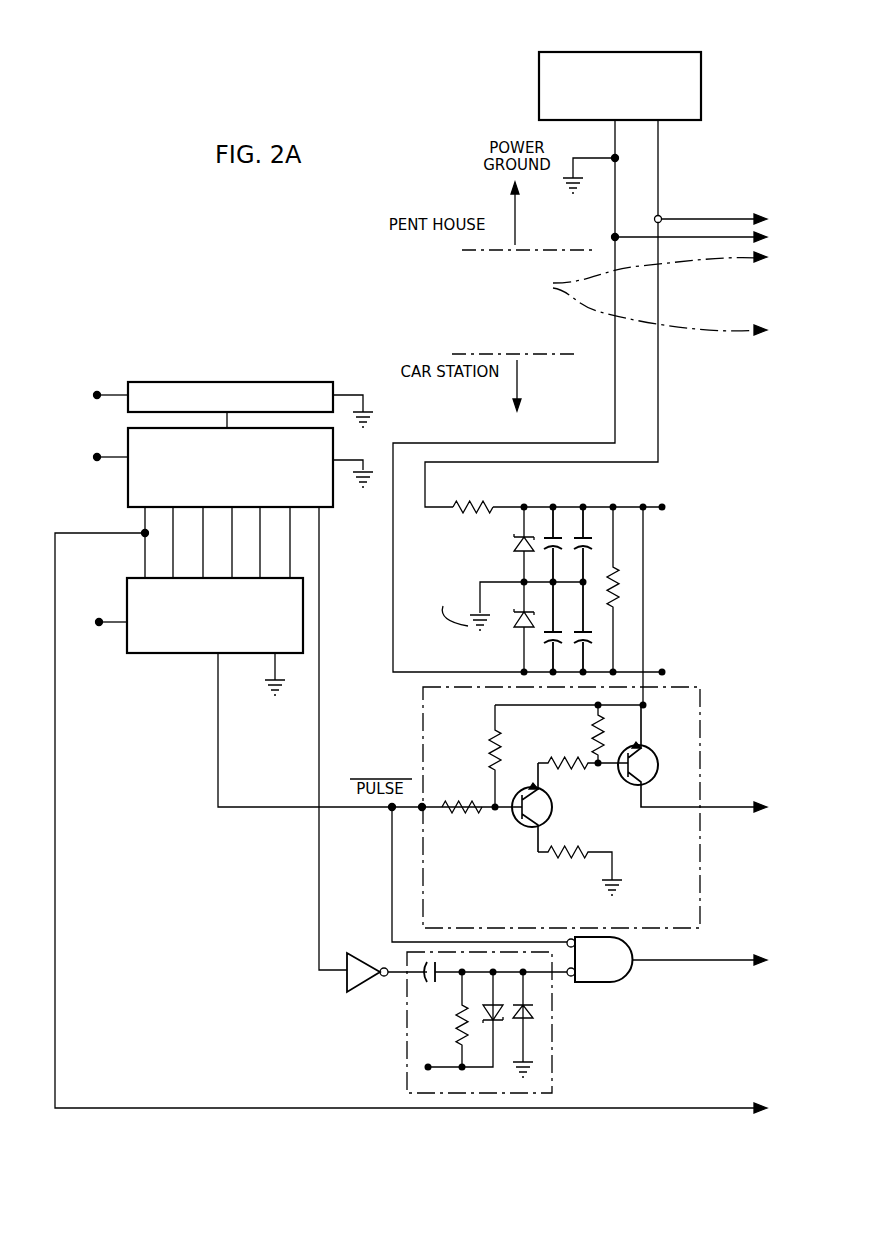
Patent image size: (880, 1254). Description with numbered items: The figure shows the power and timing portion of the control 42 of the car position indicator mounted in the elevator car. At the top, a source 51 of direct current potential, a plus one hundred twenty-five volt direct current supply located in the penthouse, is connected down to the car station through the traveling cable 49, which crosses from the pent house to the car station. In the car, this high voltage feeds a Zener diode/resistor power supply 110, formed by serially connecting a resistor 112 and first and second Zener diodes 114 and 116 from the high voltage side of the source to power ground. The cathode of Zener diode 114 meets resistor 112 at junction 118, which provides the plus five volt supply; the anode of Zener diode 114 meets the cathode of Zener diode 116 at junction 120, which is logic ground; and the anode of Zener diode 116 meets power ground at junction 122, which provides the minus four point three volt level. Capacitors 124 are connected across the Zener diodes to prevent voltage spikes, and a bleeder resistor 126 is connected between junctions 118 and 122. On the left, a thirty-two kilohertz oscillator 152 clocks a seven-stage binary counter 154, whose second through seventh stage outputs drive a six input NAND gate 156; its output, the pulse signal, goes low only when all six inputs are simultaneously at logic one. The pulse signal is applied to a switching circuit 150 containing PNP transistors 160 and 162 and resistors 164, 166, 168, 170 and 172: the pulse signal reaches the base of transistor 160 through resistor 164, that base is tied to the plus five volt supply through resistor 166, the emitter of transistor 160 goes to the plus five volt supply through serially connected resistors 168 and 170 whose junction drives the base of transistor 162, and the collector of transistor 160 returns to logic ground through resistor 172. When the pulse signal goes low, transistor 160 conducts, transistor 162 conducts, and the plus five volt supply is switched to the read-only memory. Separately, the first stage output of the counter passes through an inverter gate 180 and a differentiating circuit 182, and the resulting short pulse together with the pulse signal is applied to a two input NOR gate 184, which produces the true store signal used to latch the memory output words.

The source of direct current potential 51 is at (645, 52).
The traveling cable 49 is at (608, 293).
The 32 KHz. oscillator 152 is at (283, 382).
The 7-stage binary counter 154 is at (128, 483).
The 6 input NAND gate 156 is at (152, 653).
The Zener diode/resistor power supply 110 is at (433, 551).
The resistor 112 is at (468, 501).
The first Zener diode 114 is at (513, 540).
The second Zener diode 116 is at (514, 615).
The junction 118 is at (527, 501).
The junction 120 is at (518, 580).
The junction 122 is at (520, 671).
The capacitors 124 is at (576, 636).
The bleeder resistor 126 is at (625, 587).
The switching circuit 150 is at (423, 712).
The PNP transistor 160 is at (556, 816).
The PNP transistor 162 is at (655, 752).
The resistor 164 is at (456, 800).
The resistor 166 is at (483, 740).
The resistor 168 is at (558, 756).
The resistor 170 is at (591, 735).
The resistor 172 is at (571, 863).
The inverter gate 180 is at (360, 953).
The differentiating circuit 182 is at (552, 1036).
The 2 input NOR gate 184 is at (622, 981).
The control 42 is at (781, 1152).